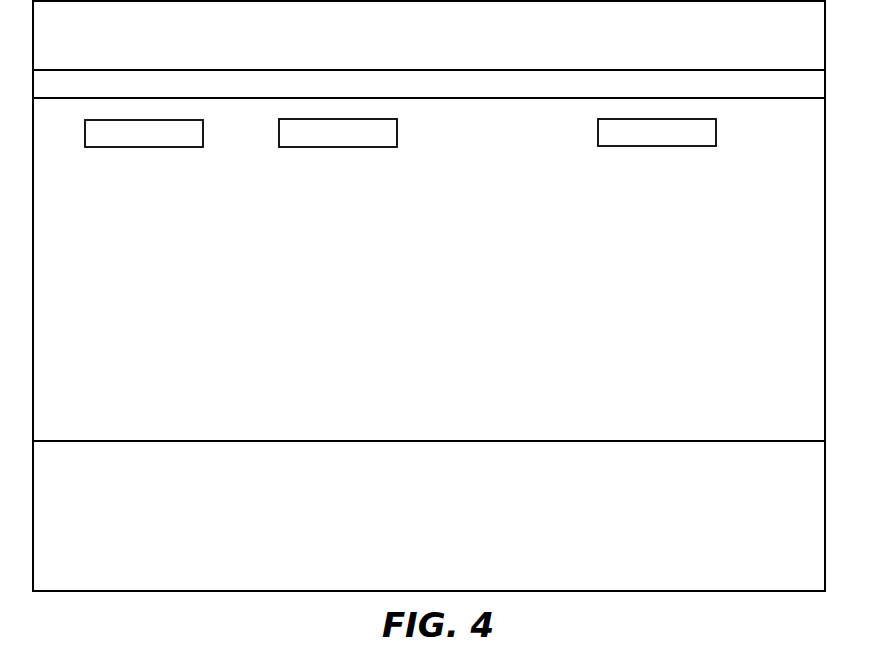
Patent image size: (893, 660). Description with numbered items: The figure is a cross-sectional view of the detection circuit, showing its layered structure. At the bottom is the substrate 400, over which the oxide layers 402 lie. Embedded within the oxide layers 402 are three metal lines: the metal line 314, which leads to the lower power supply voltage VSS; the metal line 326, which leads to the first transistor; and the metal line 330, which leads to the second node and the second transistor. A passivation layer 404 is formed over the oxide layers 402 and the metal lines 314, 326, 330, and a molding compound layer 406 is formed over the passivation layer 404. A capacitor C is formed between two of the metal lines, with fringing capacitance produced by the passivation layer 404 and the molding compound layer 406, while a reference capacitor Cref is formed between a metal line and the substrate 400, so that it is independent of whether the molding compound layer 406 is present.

The substrate 400 is at (481, 488).
The oxide layers 402 is at (481, 406).
The passivation layer 404 is at (481, 94).
The molding compound layer 406 is at (481, 48).
The metal line 314 is at (203, 133).
The metal line 326 is at (397, 134).
The metal line 330 is at (716, 133).